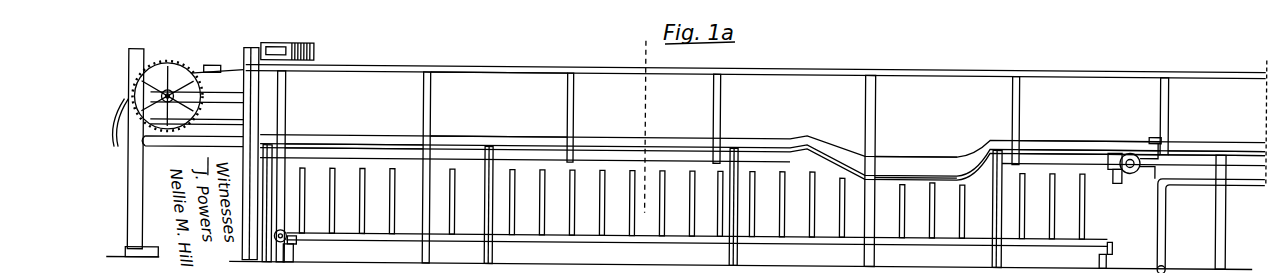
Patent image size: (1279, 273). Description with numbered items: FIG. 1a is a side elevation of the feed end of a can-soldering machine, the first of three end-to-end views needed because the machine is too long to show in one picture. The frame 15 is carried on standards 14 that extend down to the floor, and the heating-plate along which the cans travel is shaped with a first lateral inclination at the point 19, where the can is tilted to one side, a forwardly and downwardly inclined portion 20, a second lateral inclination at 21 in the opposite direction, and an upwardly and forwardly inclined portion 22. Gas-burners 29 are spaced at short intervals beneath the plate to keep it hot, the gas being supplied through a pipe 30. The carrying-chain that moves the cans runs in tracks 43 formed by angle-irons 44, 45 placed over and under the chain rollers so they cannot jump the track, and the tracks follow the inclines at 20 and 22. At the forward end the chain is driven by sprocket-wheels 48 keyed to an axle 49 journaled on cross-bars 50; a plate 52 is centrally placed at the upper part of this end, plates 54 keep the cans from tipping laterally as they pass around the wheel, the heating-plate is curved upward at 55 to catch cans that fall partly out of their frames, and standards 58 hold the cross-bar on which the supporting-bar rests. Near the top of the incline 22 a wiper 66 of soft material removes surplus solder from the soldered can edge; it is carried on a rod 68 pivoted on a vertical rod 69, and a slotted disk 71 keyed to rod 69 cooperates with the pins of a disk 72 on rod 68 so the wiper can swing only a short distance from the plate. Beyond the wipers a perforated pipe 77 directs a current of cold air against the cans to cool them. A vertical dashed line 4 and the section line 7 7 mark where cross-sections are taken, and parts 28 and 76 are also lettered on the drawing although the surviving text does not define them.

The section line 4 is at (642, 117).
The section line 7 7 is at (207, 153).
The standards 14 is at (494, 196).
The frame of the machine 15 is at (498, 104).
The first lateral inclination point 19 is at (790, 143).
The forwardly and downwardly inclined portion 20 is at (830, 140).
The second lateral inclination point 21 is at (908, 150).
The upwardly and forwardly inclined portion 22 is at (968, 147).
The finger 28 is at (937, 209).
The gas-burners 29 is at (577, 199).
The gas pipe 30 is at (690, 226).
The tracks 43 is at (325, 138).
The angle-iron 44 is at (1050, 142).
The angle-iron 45 is at (1087, 138).
The sprocket-wheels 48 is at (189, 53).
The axle 49 is at (196, 91).
The cross-bars 50 is at (221, 105).
The plate 52 is at (212, 66).
The plates 54 is at (164, 84).
The upwardly curved end of plate 55 is at (112, 127).
The standards 58 is at (252, 103).
The wiper 66 is at (1155, 131).
The rod 68 is at (1156, 166).
The vertical rod 69 is at (1125, 166).
The disk 71 is at (1112, 170).
The disk 72 is at (1107, 156).
The pipe 76 is at (1188, 142).
The pipe 77 is at (1178, 180).